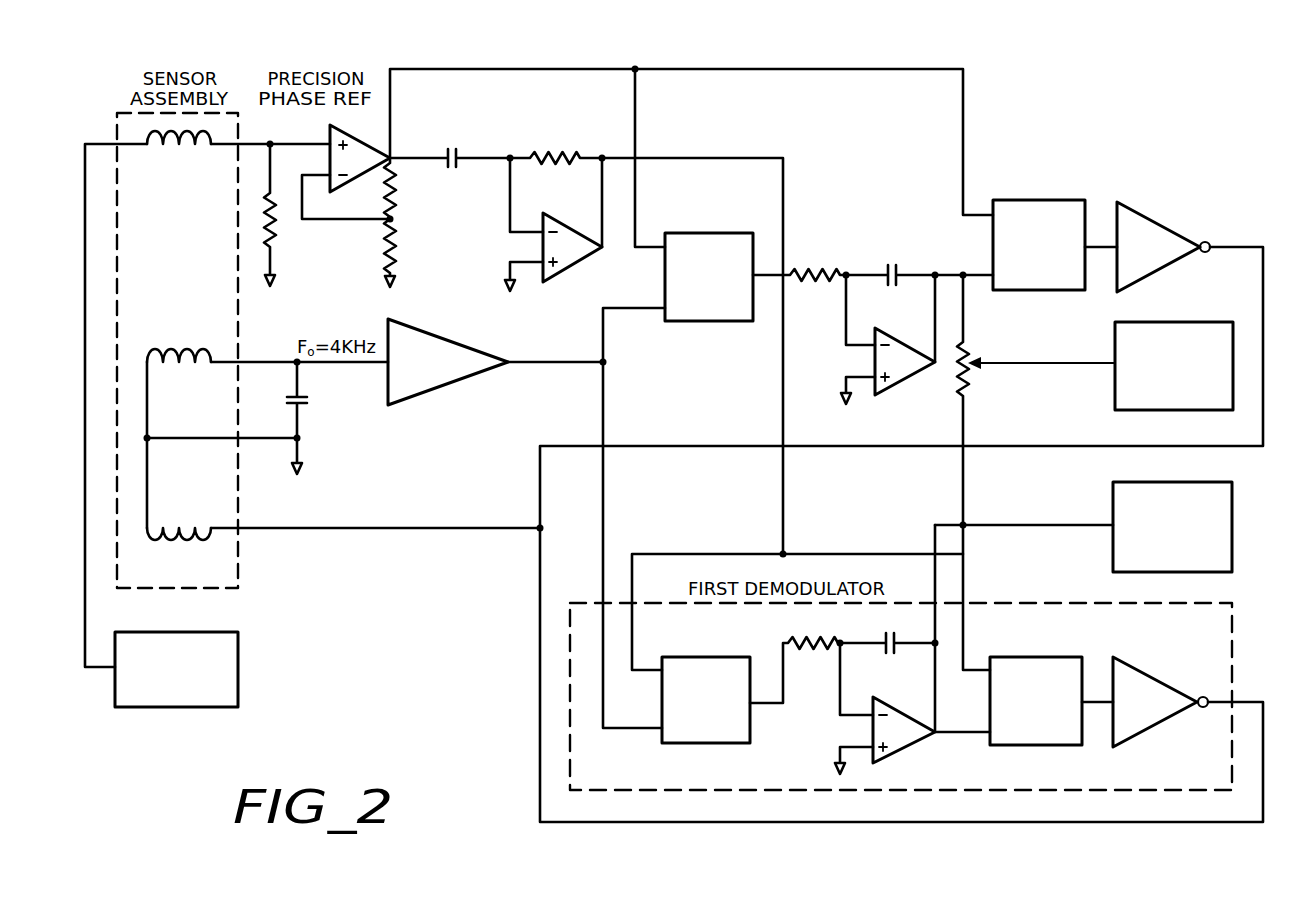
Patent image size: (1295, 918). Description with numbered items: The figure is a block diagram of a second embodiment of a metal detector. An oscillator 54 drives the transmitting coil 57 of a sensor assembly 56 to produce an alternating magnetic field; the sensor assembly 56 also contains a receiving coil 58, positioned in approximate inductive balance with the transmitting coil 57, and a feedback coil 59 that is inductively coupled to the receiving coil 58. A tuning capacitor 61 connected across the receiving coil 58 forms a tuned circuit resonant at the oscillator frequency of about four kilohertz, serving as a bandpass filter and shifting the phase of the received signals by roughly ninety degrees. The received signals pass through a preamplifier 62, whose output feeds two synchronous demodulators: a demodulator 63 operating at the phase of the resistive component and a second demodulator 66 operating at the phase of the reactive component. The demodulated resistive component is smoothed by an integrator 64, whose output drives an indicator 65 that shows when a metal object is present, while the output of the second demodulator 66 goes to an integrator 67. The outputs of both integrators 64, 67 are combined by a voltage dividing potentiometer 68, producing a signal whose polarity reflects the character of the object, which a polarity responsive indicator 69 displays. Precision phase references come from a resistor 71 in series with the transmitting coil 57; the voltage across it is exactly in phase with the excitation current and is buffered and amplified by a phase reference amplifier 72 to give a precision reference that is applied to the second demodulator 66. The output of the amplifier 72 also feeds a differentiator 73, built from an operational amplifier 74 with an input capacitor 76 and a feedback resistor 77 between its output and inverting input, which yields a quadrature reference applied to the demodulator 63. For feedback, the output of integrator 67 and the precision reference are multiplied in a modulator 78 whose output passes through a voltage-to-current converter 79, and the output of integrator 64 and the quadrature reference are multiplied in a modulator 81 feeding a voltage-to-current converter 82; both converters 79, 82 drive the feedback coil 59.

The oscillator 54 is at (238, 652).
The sensor assembly 56 is at (246, 549).
The transmitting coil 57 is at (215, 132).
The receiving coil 58 is at (199, 364).
The feedback coil 59 is at (182, 530).
The tuning capacitor 61 is at (307, 405).
The preamplifier 62 is at (443, 390).
The demodulator 63 is at (702, 736).
The integrator 64 is at (769, 650).
The indicator 65 is at (1113, 512).
The second demodulator 66 is at (714, 307).
The integrator 67 is at (931, 266).
The voltage dividing potentiometer 68 is at (969, 395).
The polarity responsive indicator 69 is at (1114, 378).
The resistor 71 is at (279, 244).
The phase reference amplifier 72 is at (366, 152).
The differentiator 73 is at (506, 212).
The operational amplifier 74 is at (570, 278).
The input capacitor 76 is at (446, 168).
The resistor 77 is at (558, 168).
The modulator 78 is at (1072, 218).
The voltage-to-current converter 79 is at (1172, 244).
The modulator 81 is at (1026, 736).
The voltage-to-current converter 82 is at (1143, 738).